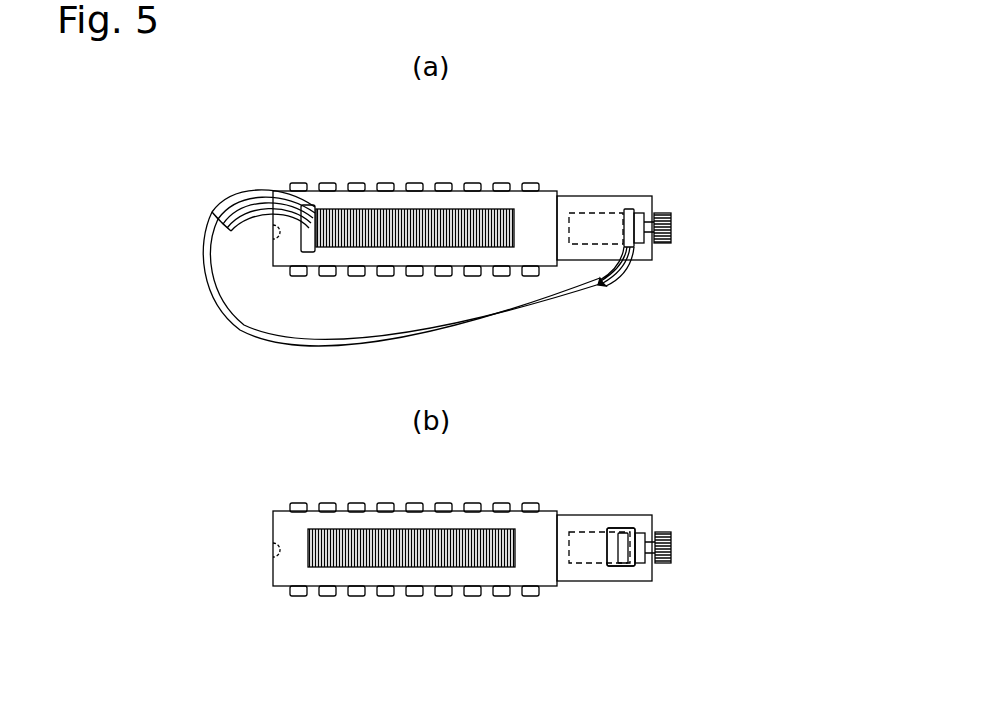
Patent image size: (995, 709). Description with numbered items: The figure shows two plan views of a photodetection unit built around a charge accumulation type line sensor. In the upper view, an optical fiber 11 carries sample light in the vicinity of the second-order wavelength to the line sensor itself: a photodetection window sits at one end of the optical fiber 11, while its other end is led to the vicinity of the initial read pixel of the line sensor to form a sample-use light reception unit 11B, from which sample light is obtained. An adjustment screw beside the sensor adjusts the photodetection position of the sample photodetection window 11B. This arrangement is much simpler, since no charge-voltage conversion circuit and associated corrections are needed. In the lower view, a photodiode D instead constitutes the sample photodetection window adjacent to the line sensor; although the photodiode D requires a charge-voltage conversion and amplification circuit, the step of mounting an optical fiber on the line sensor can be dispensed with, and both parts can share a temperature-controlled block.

The optical fiber 11 is at (586, 290).
The sample-use light reception unit 11B is at (311, 196).
The photodiode D is at (626, 528).